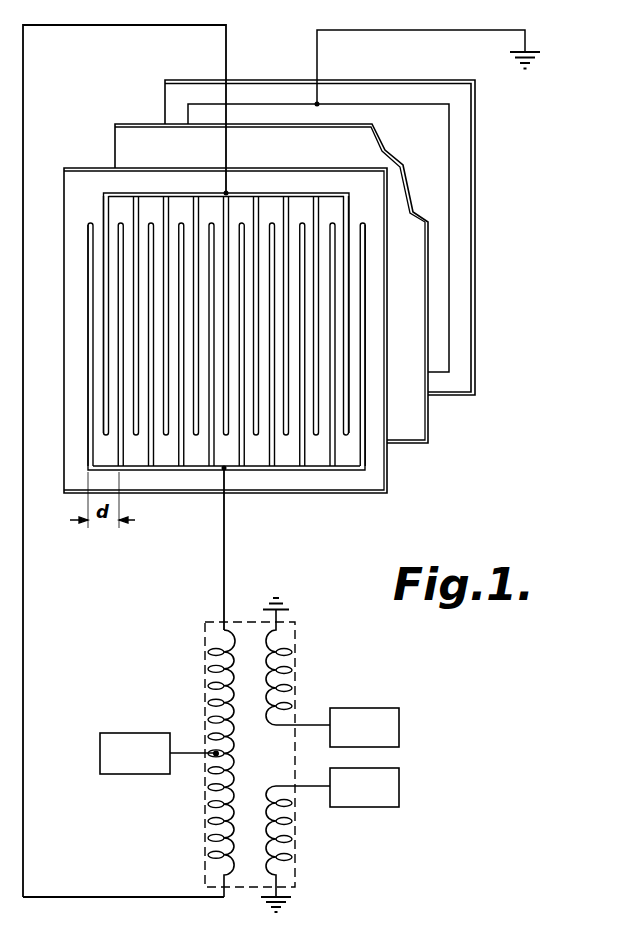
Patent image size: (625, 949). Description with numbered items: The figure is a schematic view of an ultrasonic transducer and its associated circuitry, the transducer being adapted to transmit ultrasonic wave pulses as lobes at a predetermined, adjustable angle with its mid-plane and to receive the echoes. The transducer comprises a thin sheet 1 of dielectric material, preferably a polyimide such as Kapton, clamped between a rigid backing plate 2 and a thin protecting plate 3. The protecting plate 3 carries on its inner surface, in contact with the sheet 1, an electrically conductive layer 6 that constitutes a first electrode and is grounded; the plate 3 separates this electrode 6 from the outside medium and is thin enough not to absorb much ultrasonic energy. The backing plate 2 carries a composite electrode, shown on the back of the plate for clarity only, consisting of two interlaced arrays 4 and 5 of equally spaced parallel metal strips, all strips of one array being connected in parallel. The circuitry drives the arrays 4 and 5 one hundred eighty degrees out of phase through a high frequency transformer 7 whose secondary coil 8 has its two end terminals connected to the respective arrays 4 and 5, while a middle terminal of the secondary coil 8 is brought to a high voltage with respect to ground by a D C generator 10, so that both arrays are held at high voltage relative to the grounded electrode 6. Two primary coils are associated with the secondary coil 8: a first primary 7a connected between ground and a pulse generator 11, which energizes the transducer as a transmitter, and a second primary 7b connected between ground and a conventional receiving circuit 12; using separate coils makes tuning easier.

The thin sheet of dielectric material 1 is at (418, 436).
The backing plate 2 is at (365, 486).
The protecting plate 3 is at (462, 383).
The first interlaced array 4 is at (243, 192).
The second interlaced array 5 is at (248, 470).
The electrically conductive layer 6 is at (435, 150).
The high frequency transformer 7 is at (296, 864).
The first primary coil 7a is at (280, 838).
The second primary coil 7b is at (268, 673).
The secondary coil 8 is at (213, 751).
The D C generator 10 is at (146, 767).
The pulse generator 11 is at (376, 801).
The receiving circuit 12 is at (376, 741).